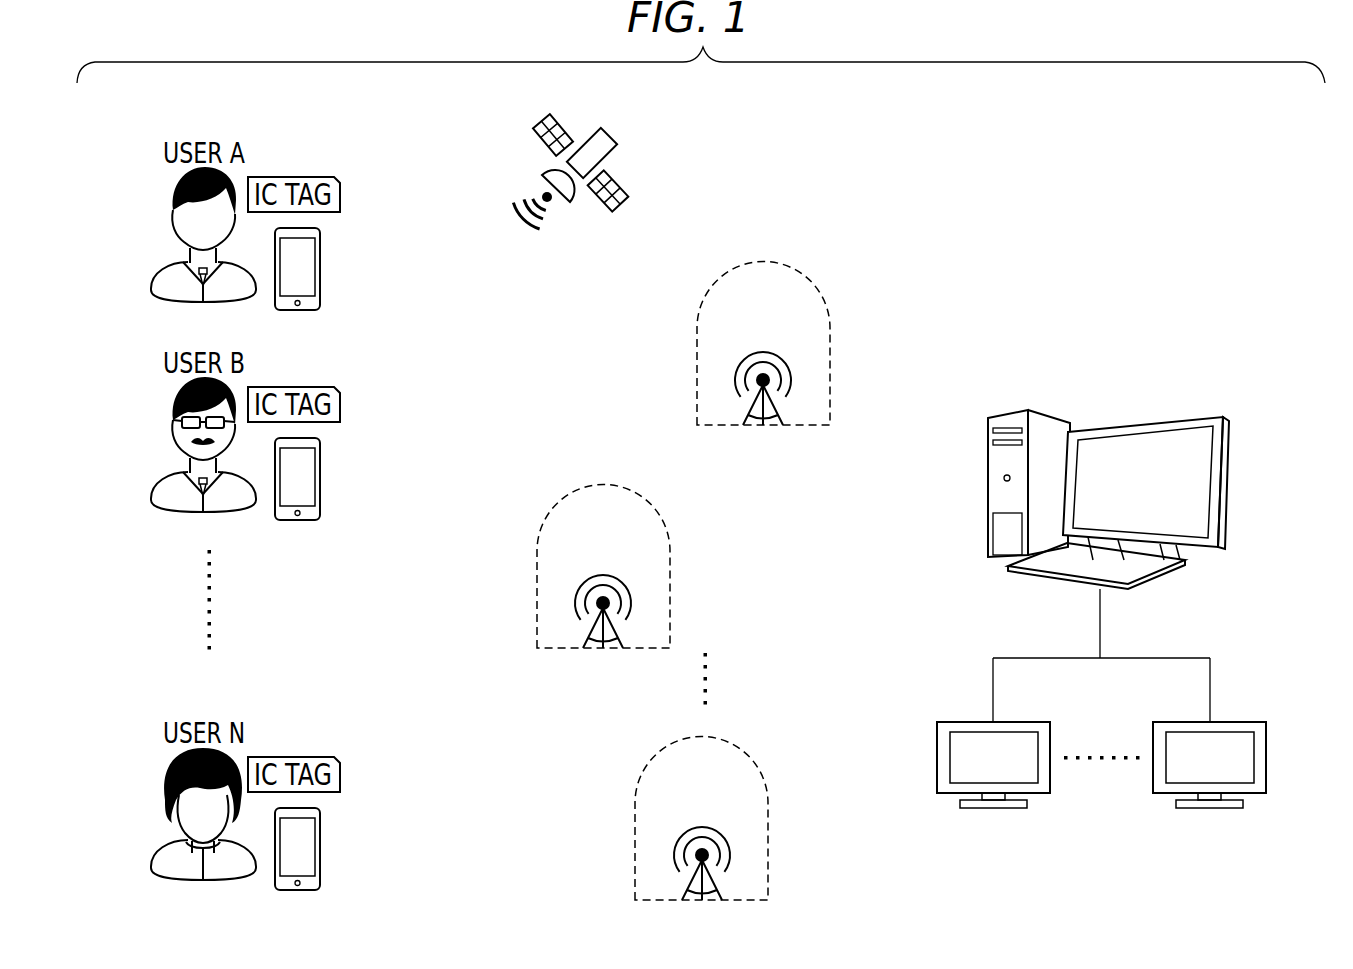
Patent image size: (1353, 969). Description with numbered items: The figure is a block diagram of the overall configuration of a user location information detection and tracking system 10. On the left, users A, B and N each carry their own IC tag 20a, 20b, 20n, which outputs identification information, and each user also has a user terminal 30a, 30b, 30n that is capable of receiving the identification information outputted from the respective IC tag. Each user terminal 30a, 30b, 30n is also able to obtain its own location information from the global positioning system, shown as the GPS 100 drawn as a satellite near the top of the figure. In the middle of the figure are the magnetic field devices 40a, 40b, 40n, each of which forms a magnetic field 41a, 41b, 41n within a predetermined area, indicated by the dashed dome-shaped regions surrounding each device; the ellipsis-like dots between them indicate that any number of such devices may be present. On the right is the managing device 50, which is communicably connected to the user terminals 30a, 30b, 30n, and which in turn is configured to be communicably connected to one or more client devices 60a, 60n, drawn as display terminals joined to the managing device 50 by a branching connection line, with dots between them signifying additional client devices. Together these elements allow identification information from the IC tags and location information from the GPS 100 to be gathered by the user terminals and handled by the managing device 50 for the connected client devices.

The user location information detection and tracking system 10 is at (1133, 126).
The IC tag 20a is at (341, 194).
The IC tag 20b is at (341, 404).
The IC tag 20n is at (341, 774).
The user terminal 30a is at (321, 271).
The user terminal 30b is at (321, 481).
The user terminal 30n is at (321, 851).
The magnetic field device 40a is at (783, 418).
The magnetic field device 40b is at (623, 641).
The magnetic field device 40n is at (722, 890).
The magnetic field 41a is at (808, 316).
The magnetic field 41b is at (648, 539).
The magnetic field 41n is at (746, 790).
The managing device 50 is at (1135, 422).
The client device 60a is at (948, 795).
The client device 60n is at (1258, 795).
The GPS 100 is at (617, 135).